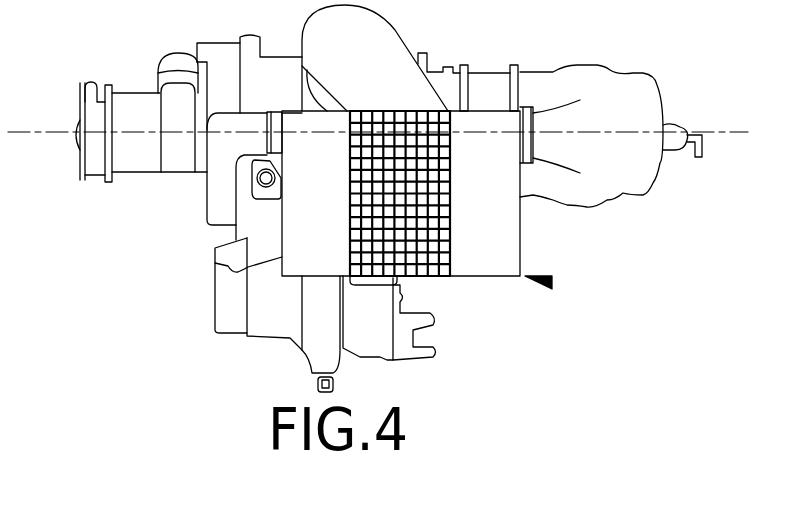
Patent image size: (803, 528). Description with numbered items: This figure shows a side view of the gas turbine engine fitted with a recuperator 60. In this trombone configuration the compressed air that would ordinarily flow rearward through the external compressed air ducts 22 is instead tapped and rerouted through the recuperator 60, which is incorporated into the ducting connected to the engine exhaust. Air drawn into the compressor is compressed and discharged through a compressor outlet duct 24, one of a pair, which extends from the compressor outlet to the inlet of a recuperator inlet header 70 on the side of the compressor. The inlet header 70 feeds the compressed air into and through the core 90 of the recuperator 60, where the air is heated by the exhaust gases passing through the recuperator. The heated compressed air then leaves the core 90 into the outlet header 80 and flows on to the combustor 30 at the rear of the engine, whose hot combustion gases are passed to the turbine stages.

The external compressed air ducts 22 is at (463, 135).
The compressor outlet ducts 24 is at (213, 192).
The combustor 30 is at (630, 85).
The recuperator 60 is at (553, 284).
The recuperator inlet headers 70 is at (215, 264).
The outlet header 80 is at (520, 237).
The recuperator core 90 is at (425, 277).